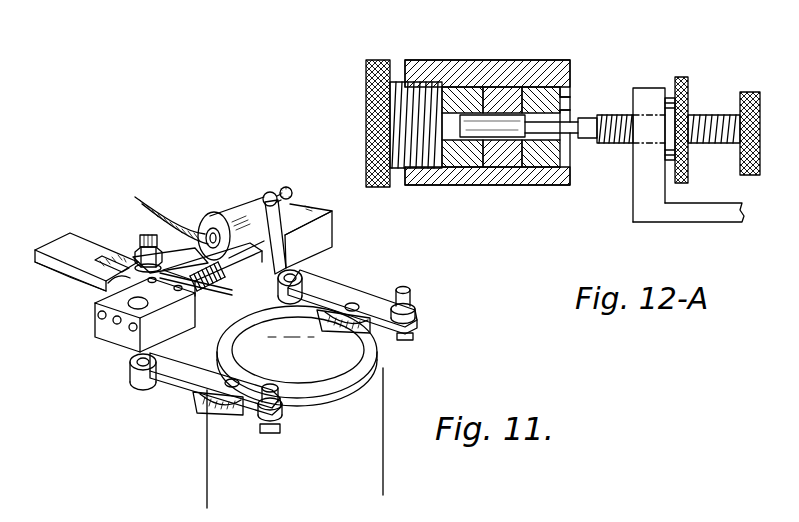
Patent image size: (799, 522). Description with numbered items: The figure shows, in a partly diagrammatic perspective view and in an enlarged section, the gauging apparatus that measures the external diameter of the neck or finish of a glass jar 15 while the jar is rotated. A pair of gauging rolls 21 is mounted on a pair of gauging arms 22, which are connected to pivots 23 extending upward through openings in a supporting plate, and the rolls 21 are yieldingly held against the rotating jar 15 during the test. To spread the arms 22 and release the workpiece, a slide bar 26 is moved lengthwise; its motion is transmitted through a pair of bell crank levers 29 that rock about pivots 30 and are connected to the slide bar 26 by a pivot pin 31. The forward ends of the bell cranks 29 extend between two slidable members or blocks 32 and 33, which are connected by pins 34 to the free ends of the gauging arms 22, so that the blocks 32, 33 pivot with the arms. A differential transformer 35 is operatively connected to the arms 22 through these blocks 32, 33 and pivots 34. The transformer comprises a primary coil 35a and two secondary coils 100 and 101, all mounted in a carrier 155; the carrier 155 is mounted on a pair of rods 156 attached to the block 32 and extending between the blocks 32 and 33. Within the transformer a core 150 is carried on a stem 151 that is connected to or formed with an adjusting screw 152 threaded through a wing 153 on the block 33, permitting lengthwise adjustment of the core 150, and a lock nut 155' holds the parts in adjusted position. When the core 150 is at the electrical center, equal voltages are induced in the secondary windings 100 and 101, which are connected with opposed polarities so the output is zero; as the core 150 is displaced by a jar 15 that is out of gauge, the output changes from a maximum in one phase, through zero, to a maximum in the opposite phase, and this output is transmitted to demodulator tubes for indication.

In FIG. 11, the jar 15 is at (207, 452).
In FIG. 11, the gauging rolls 21 is at (358, 322).
In FIG. 11, the gauging arms 22 is at (328, 291).
In FIG. 11, the pivots 23 is at (411, 291).
In FIG. 11, the slide bar 26 is at (85, 241).
In FIG. 11, the bell crank levers 29 is at (178, 252).
In FIG. 11, the pivots 30 is at (104, 285).
In FIG. 11, the pivot pin 31 is at (142, 256).
In FIG. 11, the slidable member 32 is at (181, 335).
In FIG. 12A, the slidable member 33 is at (710, 212).
In FIG. 11, the slidable member 33 is at (318, 230).
In FIG. 11, the pins 34 is at (301, 273).
In FIG. 12A, the differential transformer 35 is at (571, 53).
In FIG. 11, the differential transformer 35 is at (214, 246).
In FIG. 12A, the primary coil 35a is at (498, 97).
In FIG. 12A, the secondary coil 100 is at (465, 95).
In FIG. 12A, the secondary coil 101 is at (565, 110).
In FIG. 12A, the core 150 is at (503, 128).
In FIG. 12A, the stem 151 is at (574, 134).
In FIG. 12A, the adjusting screw 152 is at (712, 115).
In FIG. 12A, the wing 153 is at (648, 92).
In FIG. 12A, the carrier 155 is at (488, 55).
In FIG. 11, the carrier 155 is at (267, 249).
In FIG. 12A, the lock nut 155' is at (691, 110).
In FIG. 11, the rods 156 is at (228, 280).